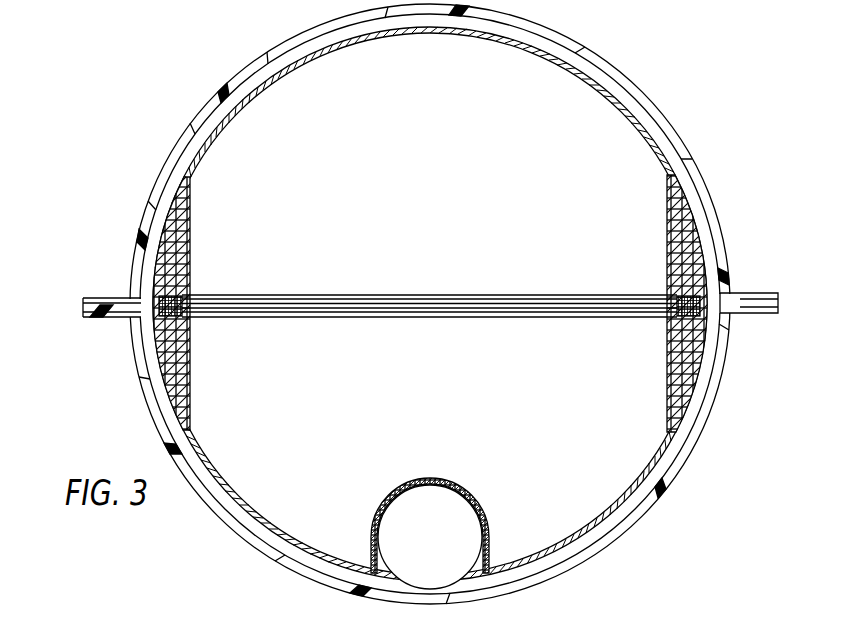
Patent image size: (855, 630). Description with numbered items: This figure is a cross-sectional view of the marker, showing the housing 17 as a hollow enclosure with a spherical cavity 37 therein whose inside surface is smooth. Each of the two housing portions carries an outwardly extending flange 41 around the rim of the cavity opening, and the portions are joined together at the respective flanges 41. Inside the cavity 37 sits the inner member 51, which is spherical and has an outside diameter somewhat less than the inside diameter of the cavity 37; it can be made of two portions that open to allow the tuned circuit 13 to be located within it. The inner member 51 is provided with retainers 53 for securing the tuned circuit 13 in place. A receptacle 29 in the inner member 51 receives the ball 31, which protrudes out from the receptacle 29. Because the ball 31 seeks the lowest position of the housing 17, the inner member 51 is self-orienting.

The tuned circuit 13 is at (318, 293).
The housing 17 is at (197, 115).
The receptacle 29 is at (487, 527).
The ball 31 is at (402, 540).
The cavity 37 is at (152, 230).
The flange 41 is at (83, 312).
The inner member 51 is at (570, 65).
The retainers 53 is at (687, 238).